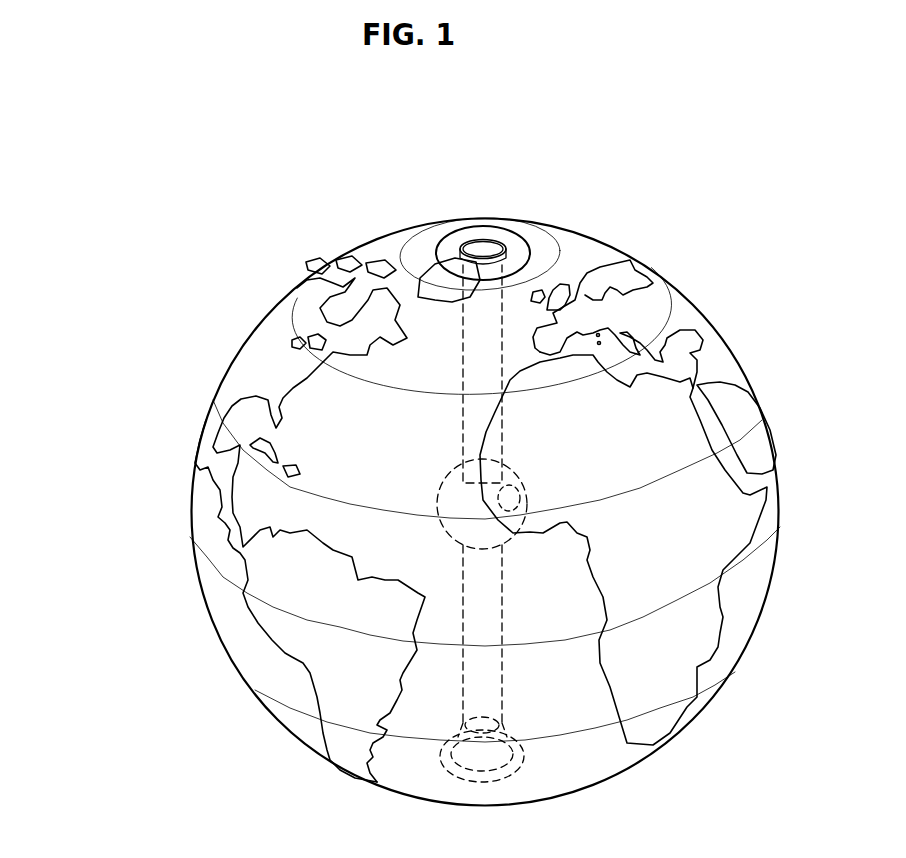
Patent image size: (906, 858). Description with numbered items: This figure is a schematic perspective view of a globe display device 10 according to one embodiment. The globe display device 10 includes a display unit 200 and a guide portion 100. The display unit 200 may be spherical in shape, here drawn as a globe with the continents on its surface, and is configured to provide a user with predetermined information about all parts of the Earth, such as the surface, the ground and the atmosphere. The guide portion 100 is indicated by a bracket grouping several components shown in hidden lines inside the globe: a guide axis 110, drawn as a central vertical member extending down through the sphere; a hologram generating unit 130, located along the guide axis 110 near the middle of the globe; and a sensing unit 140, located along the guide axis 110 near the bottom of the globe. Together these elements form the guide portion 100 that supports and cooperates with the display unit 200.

The globe display device 10 is at (684, 138).
The guide portion 100 is at (100, 362).
The guide axis 110 is at (480, 360).
The hologram generating unit 130 is at (477, 505).
The sensing unit 140 is at (478, 752).
The display unit 200 is at (363, 316).